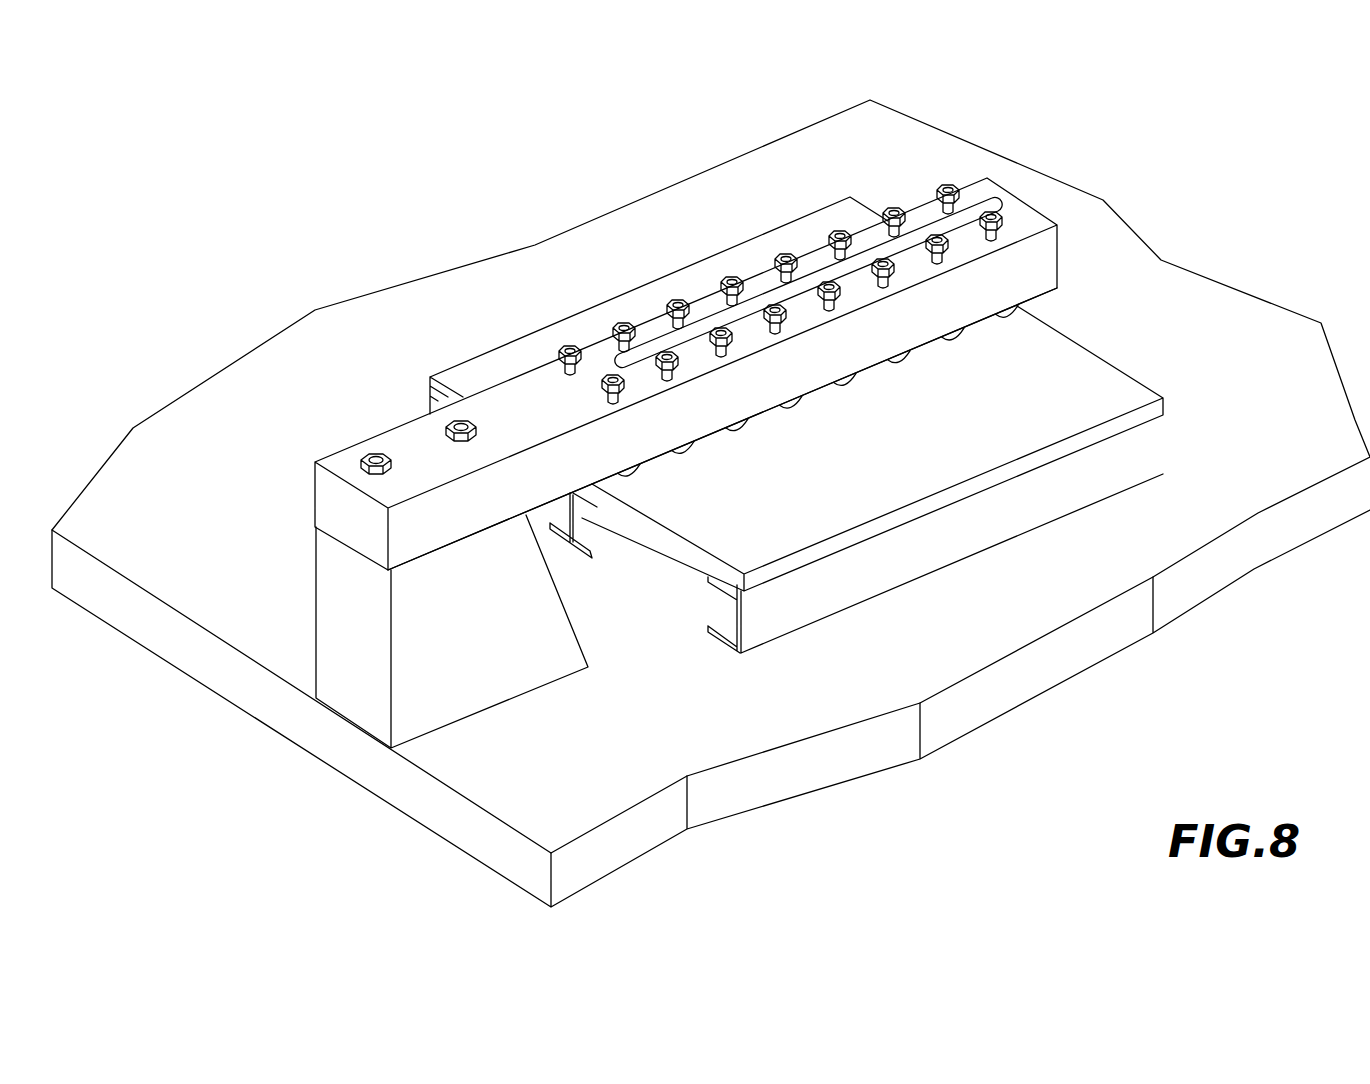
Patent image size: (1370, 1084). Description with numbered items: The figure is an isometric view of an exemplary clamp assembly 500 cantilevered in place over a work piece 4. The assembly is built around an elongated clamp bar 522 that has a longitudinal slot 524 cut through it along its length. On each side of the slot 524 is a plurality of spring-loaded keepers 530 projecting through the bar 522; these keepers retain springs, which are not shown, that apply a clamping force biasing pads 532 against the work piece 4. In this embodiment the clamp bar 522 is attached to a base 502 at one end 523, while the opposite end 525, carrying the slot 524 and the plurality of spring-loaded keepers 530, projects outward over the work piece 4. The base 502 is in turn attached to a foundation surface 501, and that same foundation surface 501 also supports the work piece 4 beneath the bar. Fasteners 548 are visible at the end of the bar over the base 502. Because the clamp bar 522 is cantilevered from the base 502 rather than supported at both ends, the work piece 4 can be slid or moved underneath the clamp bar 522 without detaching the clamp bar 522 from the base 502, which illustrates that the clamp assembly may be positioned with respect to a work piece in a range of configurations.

The clamp assembly 500 is at (711, 501).
The foundation surface 501 is at (442, 811).
The base 502 is at (483, 676).
The work piece 4 is at (667, 550).
The clamp bar 522 is at (689, 345).
The end 523 is at (432, 567).
The longitudinal slot 524 is at (963, 222).
The opposite end 525 is at (930, 426).
The spring-loaded keepers 530 is at (1069, 242).
The pads 532 is at (643, 479).
The nuts 548 is at (458, 420).